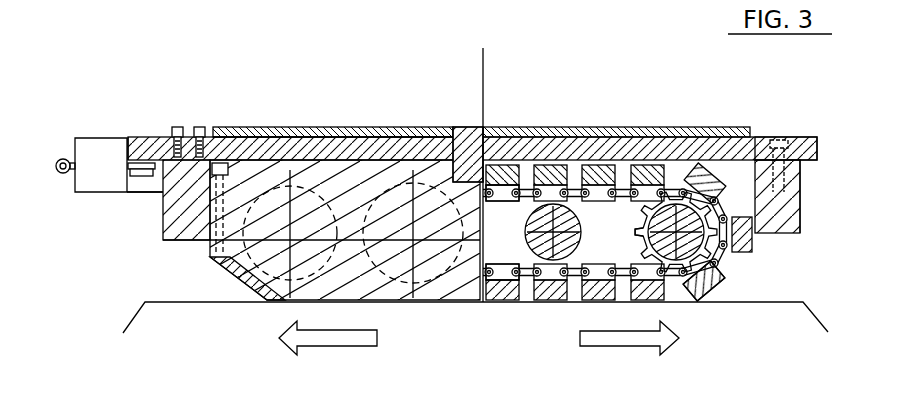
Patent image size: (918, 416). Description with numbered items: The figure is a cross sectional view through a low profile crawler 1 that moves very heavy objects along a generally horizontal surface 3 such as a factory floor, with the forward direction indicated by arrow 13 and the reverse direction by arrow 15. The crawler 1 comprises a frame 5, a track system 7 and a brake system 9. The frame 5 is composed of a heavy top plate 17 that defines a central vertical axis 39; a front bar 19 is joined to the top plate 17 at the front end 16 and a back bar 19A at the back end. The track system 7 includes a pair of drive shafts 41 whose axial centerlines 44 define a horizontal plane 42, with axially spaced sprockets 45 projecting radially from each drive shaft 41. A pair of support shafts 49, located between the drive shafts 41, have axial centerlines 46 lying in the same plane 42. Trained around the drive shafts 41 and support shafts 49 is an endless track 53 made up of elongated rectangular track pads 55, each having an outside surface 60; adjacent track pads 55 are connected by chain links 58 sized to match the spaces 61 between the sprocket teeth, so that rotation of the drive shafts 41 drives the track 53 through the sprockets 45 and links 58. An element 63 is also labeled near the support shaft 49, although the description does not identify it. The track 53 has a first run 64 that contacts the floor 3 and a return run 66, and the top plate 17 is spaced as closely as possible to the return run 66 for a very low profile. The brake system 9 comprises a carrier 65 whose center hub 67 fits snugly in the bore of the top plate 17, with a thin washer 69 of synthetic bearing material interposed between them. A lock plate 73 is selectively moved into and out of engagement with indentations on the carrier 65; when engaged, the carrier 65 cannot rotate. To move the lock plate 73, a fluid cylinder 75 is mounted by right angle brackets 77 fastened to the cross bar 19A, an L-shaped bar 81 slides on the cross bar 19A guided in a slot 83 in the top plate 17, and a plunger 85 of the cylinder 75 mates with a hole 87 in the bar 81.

The low profile crawler 1 is at (337, 128).
The horizontal surface 3 is at (776, 300).
The frame 5 is at (802, 200).
The track system 7 is at (733, 280).
The brake system 9 is at (303, 128).
The forward direction arrow 13 is at (614, 346).
The reverse direction arrow 15 is at (341, 346).
The front end 16 is at (818, 148).
The top plate 17 is at (818, 140).
The front bar 19 is at (793, 224).
The back bar 19A is at (183, 238).
The central vertical axis 39 is at (481, 90).
The drive shaft 41 is at (712, 195).
The horizontal plane 42 is at (227, 277).
The drive shaft axial centerline 44 is at (285, 243).
The sprocket 45 is at (640, 243).
The support shaft axial centerline 46 is at (400, 243).
The support shaft 49 is at (522, 224).
The endless track 53 is at (718, 294).
The track pad 55 is at (497, 304).
The chain link 58 is at (698, 292).
The outside surface 60 is at (551, 165).
The space between sprocket teeth 61 is at (641, 230).
The roller 63 is at (509, 262).
The first run 64 is at (590, 302).
The carrier 65 is at (527, 127).
The return run 66 is at (497, 165).
The center hub 67 is at (463, 158).
The thin washer 69 is at (372, 137).
The lock plate 73 is at (184, 127).
The fluid cylinder 75 is at (80, 145).
The right angle bracket 77 is at (130, 187).
The L-shaped bar 81 is at (130, 148).
The slot 83 is at (257, 157).
The plunger 85 is at (128, 162).
The hole 87 is at (148, 195).